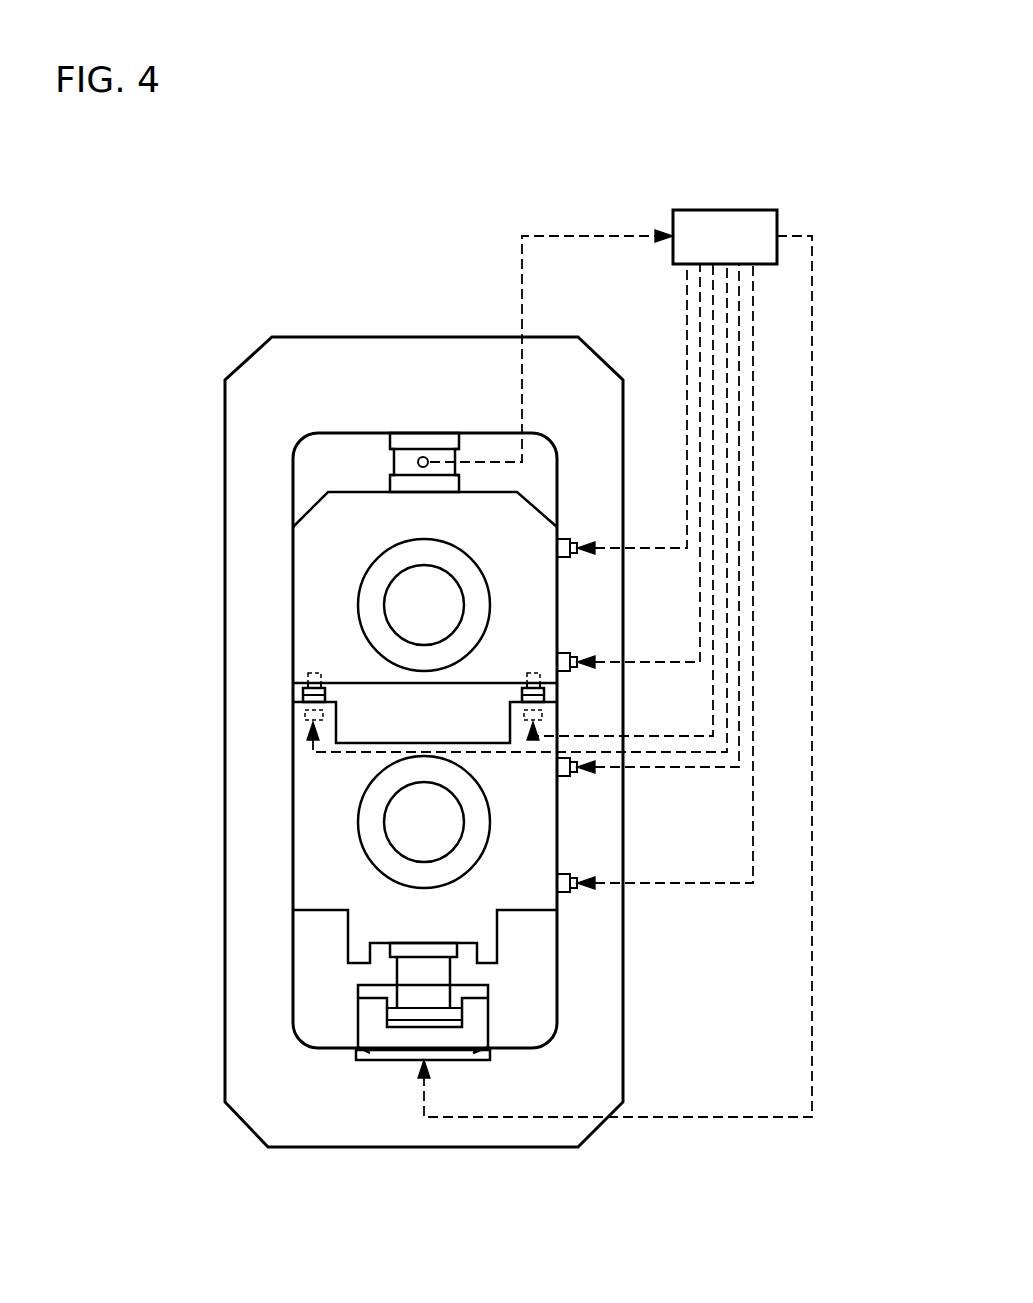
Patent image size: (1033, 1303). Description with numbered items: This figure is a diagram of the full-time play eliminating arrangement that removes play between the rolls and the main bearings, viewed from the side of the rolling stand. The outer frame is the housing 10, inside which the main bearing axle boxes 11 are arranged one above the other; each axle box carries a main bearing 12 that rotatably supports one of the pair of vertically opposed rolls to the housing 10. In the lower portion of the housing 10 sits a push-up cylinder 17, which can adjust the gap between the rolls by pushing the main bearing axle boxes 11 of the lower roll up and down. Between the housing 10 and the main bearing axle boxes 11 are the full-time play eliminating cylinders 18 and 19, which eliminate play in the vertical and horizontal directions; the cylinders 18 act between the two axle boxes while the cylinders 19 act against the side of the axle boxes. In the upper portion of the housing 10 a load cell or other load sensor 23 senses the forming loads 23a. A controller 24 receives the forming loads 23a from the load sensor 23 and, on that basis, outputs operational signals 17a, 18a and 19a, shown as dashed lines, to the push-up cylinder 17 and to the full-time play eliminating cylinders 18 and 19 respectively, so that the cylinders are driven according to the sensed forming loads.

The housing 10 is at (278, 358).
The main bearing axle box 11 is at (306, 578).
The main bearing 12 is at (360, 635).
The push-up cylinder 17 is at (342, 1019).
The operational signal 17a is at (693, 1119).
The full-time play eliminating cylinder 18 is at (290, 714).
The operational signal 18a is at (695, 735).
The full-time play eliminating cylinder 19 is at (570, 538).
The operational signal 19a is at (685, 372).
The load sensor 23 is at (403, 464).
The forming load 23a is at (562, 233).
The controller 24 is at (727, 208).